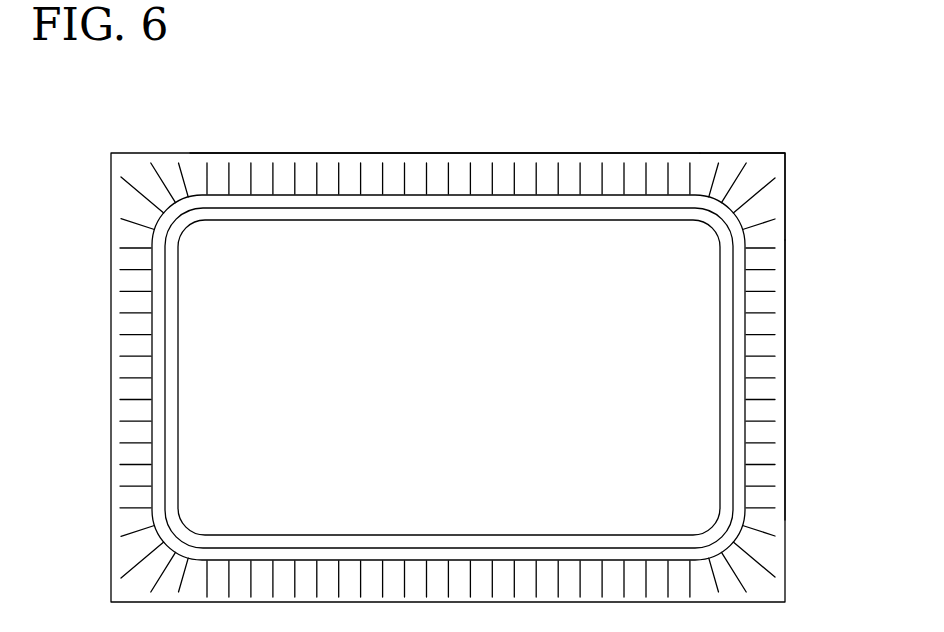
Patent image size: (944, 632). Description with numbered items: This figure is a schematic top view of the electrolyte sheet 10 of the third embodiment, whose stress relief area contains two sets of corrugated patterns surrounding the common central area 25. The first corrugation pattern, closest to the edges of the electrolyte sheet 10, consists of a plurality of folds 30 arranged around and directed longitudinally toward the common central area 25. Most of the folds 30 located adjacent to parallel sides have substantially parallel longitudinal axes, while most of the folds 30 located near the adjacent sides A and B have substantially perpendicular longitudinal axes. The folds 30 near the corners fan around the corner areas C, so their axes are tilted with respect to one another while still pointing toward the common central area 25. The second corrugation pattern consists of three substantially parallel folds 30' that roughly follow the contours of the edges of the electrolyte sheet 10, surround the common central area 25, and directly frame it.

The electrolyte sheet 10 is at (736, 107).
The common central area 25 is at (408, 262).
The folds 30 is at (502, 318).
The folds 30' is at (522, 309).
The side A is at (570, 152).
The side B is at (786, 300).
The corner area C is at (788, 165).